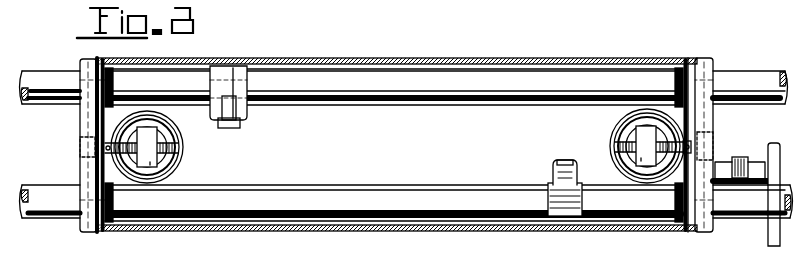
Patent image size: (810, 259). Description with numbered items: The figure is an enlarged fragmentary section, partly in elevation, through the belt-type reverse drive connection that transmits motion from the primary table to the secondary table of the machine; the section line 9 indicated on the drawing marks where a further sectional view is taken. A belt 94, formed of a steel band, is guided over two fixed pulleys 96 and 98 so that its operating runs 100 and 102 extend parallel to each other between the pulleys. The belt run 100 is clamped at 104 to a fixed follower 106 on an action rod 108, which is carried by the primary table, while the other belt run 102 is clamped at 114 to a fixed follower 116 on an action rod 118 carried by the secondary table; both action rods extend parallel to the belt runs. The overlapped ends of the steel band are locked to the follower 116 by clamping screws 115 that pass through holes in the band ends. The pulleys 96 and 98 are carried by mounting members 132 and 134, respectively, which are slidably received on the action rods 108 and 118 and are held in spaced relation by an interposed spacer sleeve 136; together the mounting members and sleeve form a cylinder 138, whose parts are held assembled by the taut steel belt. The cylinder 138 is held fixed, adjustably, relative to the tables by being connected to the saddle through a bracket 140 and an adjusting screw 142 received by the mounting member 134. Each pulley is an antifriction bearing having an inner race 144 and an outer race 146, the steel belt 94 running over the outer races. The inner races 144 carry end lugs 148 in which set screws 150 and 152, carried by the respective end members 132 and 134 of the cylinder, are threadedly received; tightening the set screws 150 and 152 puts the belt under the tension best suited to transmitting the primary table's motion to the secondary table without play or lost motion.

The section line 9- 9 is at (47, 143).
The belt 94 is at (322, 112).
The pulley 96 is at (184, 157).
The pulley 98 is at (607, 141).
The belt run 100 is at (380, 110).
The belt run 102 is at (393, 182).
The clamp 104 is at (240, 118).
The follower 106 is at (225, 80).
The action rod 108 is at (397, 80).
The clamp 114 is at (553, 183).
The clamping screws 115 is at (560, 162).
The follower 116 is at (548, 202).
The action rod 118 is at (440, 197).
The mounting member 132 is at (83, 172).
The mounting member 134 is at (703, 80).
The spacer sleeve 136 is at (568, 58).
The cylinder 138 is at (688, 58).
The bracket 140 is at (776, 150).
The adjusting screw 142 is at (738, 157).
The inner race 144 is at (157, 138).
The outer race 146 is at (176, 165).
The end lug 148 is at (150, 162).
The set screw 150 is at (162, 150).
The set screw 152 is at (630, 155).